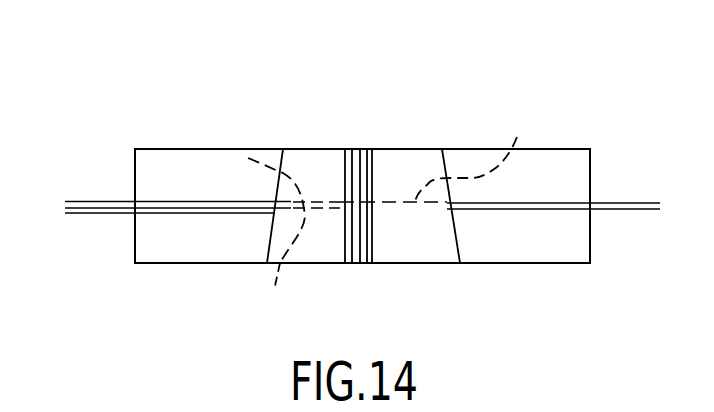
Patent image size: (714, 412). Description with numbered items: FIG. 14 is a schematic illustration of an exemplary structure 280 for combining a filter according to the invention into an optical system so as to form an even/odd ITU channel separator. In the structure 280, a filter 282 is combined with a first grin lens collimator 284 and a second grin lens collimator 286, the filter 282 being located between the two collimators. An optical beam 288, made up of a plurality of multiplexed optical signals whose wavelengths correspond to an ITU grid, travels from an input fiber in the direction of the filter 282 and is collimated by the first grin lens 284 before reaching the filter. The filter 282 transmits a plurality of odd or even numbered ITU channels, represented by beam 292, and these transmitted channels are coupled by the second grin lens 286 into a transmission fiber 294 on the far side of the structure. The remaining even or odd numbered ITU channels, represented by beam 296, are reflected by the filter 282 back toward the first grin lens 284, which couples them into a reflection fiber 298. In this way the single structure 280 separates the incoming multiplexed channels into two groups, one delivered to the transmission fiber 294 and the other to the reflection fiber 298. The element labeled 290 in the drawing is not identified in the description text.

The structure 280 is at (341, 90).
The filter 282 is at (358, 132).
The first grin lens collimator 284 is at (310, 168).
The second grin lens collimator 286 is at (417, 149).
The optical beam 288 is at (245, 152).
The optical fiber cable 290 is at (195, 201).
The beam 292 is at (479, 154).
The transmission fiber 294 is at (617, 203).
The beam 296 is at (273, 291).
The reflection fiber 298 is at (85, 213).